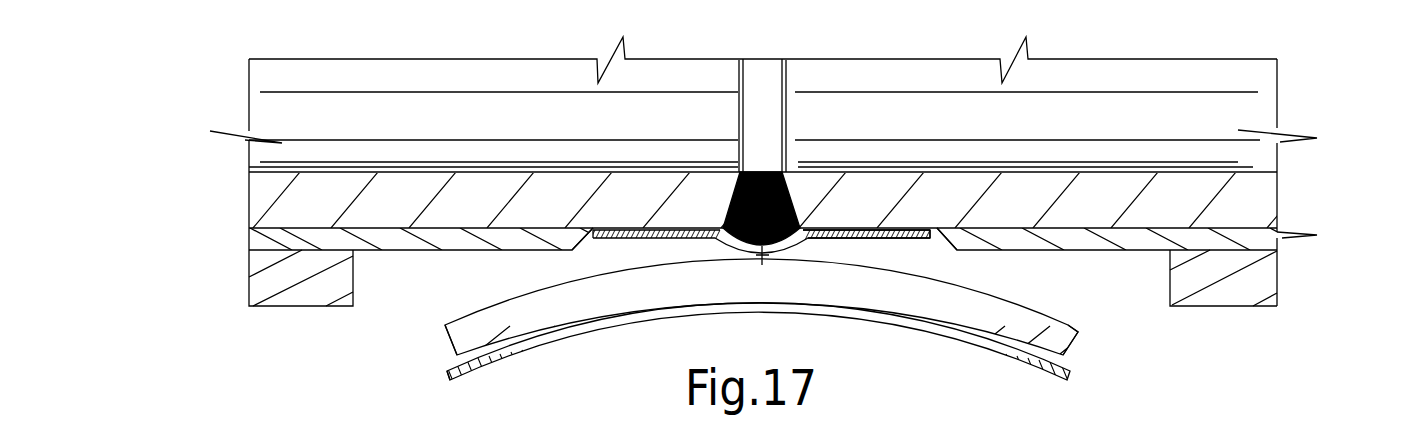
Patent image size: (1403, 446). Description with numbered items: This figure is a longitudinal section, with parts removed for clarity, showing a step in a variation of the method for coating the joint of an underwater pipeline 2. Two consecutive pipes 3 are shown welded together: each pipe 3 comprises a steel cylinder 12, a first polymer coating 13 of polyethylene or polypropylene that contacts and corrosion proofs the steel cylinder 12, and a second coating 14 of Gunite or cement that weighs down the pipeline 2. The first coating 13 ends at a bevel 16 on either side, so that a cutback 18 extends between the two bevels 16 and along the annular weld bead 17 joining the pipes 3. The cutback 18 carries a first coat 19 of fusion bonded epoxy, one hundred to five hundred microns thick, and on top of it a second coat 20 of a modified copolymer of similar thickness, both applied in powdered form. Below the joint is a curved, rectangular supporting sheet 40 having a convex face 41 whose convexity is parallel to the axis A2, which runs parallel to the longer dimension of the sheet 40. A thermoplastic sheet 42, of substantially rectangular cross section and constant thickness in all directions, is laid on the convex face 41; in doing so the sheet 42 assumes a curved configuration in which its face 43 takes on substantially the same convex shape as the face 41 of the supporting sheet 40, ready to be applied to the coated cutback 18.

The underwater pipeline 2 is at (428, 389).
The pipe 3 is at (407, 325).
The steel cylinder 12 is at (260, 198).
The first polymer coating 13 is at (256, 245).
The second coating 14 is at (278, 302).
The bevel 16 is at (583, 247).
The annular weld bead 17 is at (737, 193).
The cutback 18 is at (485, 271).
The first coat 19 is at (885, 232).
The second coat 20 is at (612, 226).
The curved rectangular supporting sheet 40 is at (857, 330).
The convex face 41 is at (1025, 338).
The thermoplastic sheet 42 is at (1048, 292).
The face of thermoplastic sheet 43 is at (652, 264).
The axis A2 is at (775, 253).